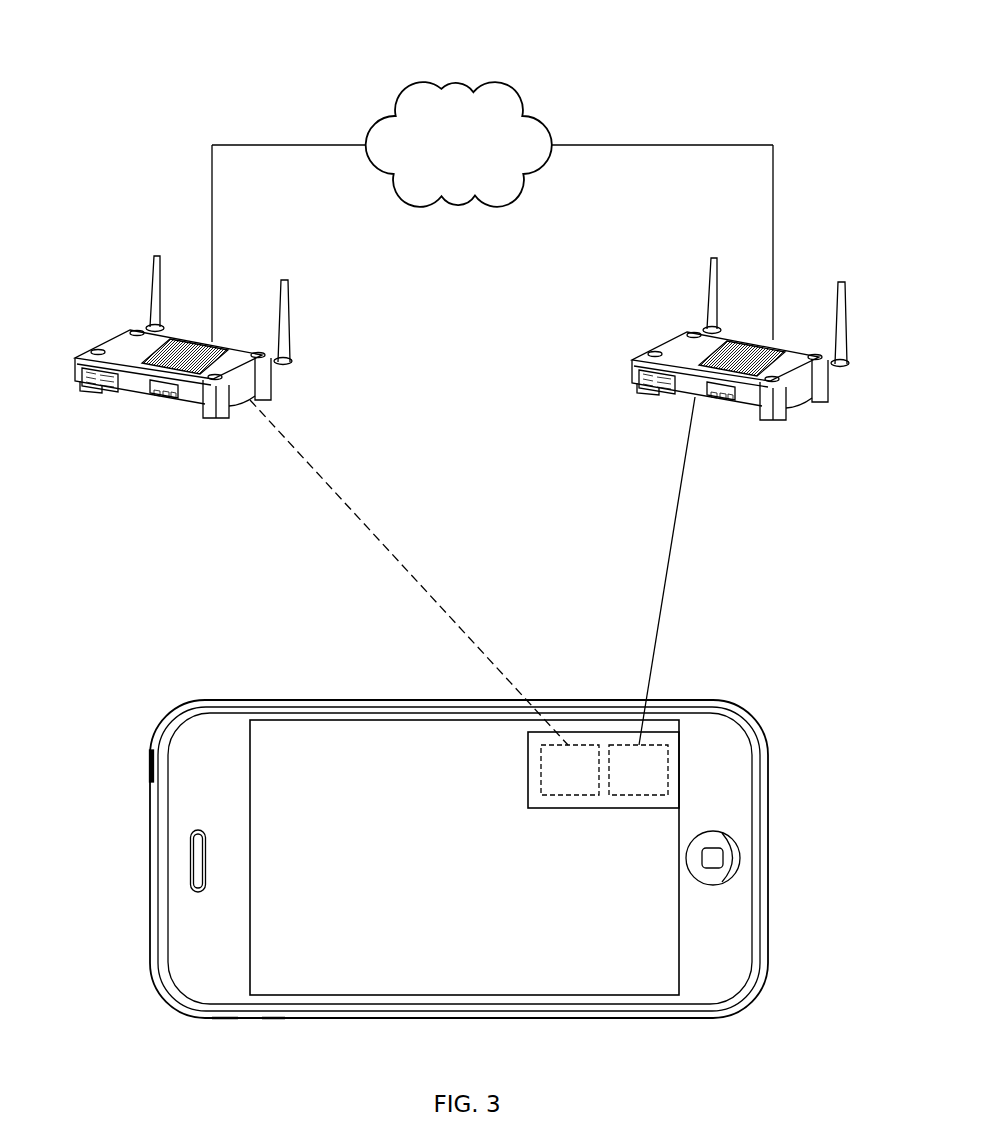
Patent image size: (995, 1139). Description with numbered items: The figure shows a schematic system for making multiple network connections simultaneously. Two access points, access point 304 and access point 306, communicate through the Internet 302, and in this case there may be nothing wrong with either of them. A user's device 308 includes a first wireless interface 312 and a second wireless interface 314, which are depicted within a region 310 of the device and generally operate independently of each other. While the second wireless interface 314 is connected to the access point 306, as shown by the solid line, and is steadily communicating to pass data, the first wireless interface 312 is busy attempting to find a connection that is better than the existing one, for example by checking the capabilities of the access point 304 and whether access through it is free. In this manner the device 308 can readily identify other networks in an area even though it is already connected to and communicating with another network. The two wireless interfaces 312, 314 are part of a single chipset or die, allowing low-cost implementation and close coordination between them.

The Internet 302 is at (457, 82).
The access point 304 is at (183, 395).
The access point 306 is at (738, 395).
The device 308 is at (265, 700).
The user interface element 310 is at (528, 770).
The first wireless interface 312 is at (572, 795).
The second wireless interface 314 is at (640, 795).